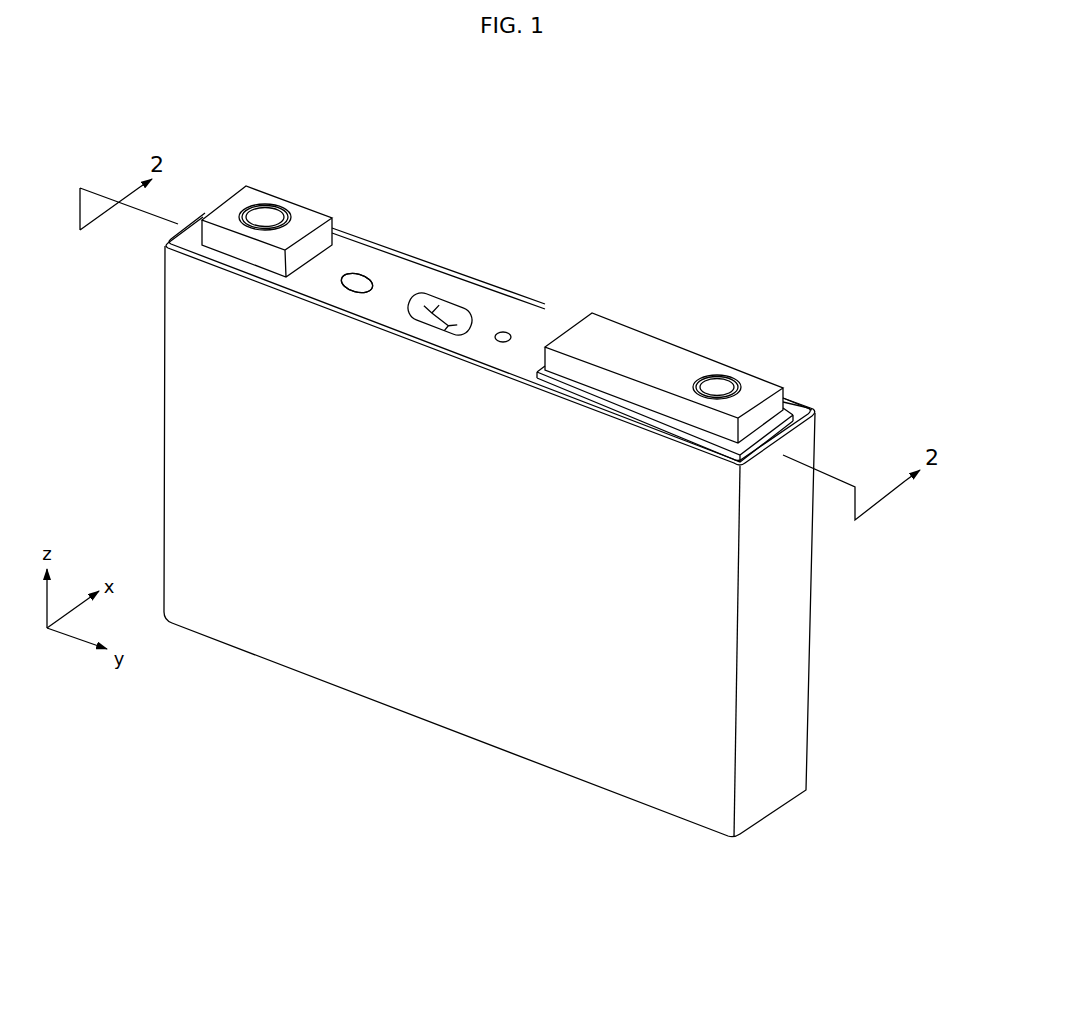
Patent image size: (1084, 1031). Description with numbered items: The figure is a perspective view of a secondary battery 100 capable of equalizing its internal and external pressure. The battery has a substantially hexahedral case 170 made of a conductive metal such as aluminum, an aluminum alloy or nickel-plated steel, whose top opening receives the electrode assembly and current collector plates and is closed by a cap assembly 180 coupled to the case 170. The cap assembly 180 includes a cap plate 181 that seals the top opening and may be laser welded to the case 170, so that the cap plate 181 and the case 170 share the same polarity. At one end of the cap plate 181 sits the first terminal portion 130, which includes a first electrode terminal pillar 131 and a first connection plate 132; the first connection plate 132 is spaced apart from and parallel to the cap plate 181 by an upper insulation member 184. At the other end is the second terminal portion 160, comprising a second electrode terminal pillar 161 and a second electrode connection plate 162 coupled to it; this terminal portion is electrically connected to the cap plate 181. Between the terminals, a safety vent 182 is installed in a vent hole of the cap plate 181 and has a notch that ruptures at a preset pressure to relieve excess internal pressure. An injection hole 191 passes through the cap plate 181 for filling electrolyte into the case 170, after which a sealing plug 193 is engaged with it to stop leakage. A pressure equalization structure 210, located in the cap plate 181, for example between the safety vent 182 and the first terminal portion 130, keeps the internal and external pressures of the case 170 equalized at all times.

The secondary battery 100 is at (900, 238).
The first terminal portion 130 is at (745, 282).
The first electrode terminal pillar 131 is at (717, 385).
The first connection plate 132 is at (630, 347).
The second terminal portion 160 is at (245, 145).
The second electrode terminal pillar 161 is at (265, 215).
The second electrode connection plate 162 is at (311, 218).
The case 170 is at (778, 639).
The cap assembly 180 is at (516, 324).
The cap plate 181 is at (398, 275).
The safety vent 182 is at (455, 298).
The upper insulation member 184 is at (792, 402).
The injection hole 191 is at (352, 292).
The sealing plug 193 is at (342, 280).
The pressure equalization structure 210 is at (498, 343).